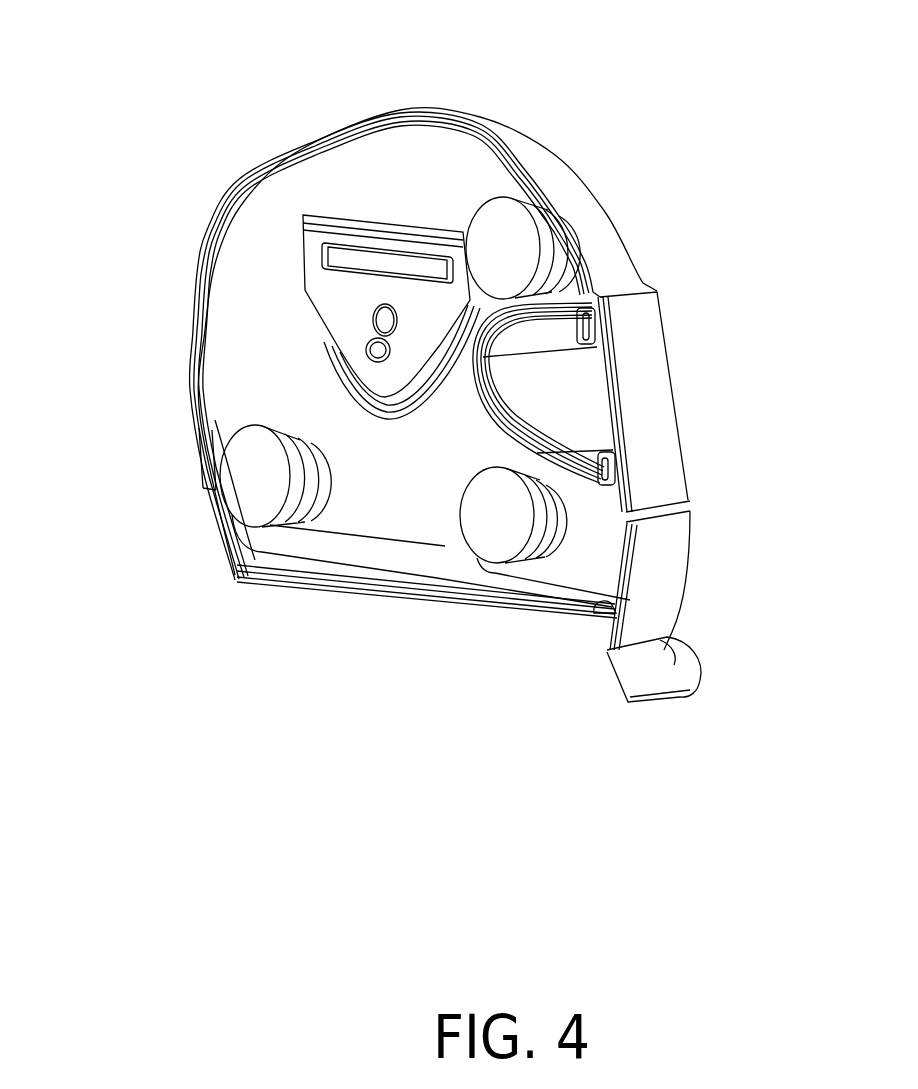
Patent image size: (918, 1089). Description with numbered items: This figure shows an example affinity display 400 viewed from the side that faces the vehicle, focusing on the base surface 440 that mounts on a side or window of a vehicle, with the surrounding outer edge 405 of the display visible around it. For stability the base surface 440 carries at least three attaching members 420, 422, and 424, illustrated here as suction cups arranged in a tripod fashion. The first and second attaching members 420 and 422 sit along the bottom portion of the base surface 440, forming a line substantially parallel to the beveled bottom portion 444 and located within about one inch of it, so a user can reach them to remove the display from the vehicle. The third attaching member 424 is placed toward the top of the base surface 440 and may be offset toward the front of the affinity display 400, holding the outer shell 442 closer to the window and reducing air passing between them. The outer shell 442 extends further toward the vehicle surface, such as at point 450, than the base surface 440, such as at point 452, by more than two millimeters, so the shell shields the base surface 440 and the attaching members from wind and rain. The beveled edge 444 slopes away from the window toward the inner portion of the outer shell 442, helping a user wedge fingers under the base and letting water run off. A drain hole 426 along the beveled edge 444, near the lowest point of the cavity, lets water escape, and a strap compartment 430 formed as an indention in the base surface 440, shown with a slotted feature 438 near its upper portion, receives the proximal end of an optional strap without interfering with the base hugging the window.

The affinity display 400 is at (430, 385).
The outer shell 405 is at (555, 183).
The first attaching member 420 is at (260, 510).
The second attaching member 422 is at (495, 545).
The third attaching member 424 is at (518, 257).
The drain hole 426 is at (597, 603).
The strap compartment 430 is at (380, 412).
The slot 438 is at (420, 250).
The base surface 440 is at (243, 388).
The outer shell 442 is at (613, 212).
The beveled bottom portion 444 is at (419, 560).
The point on outer shell 450 is at (198, 273).
The point on base surface 452 is at (208, 313).